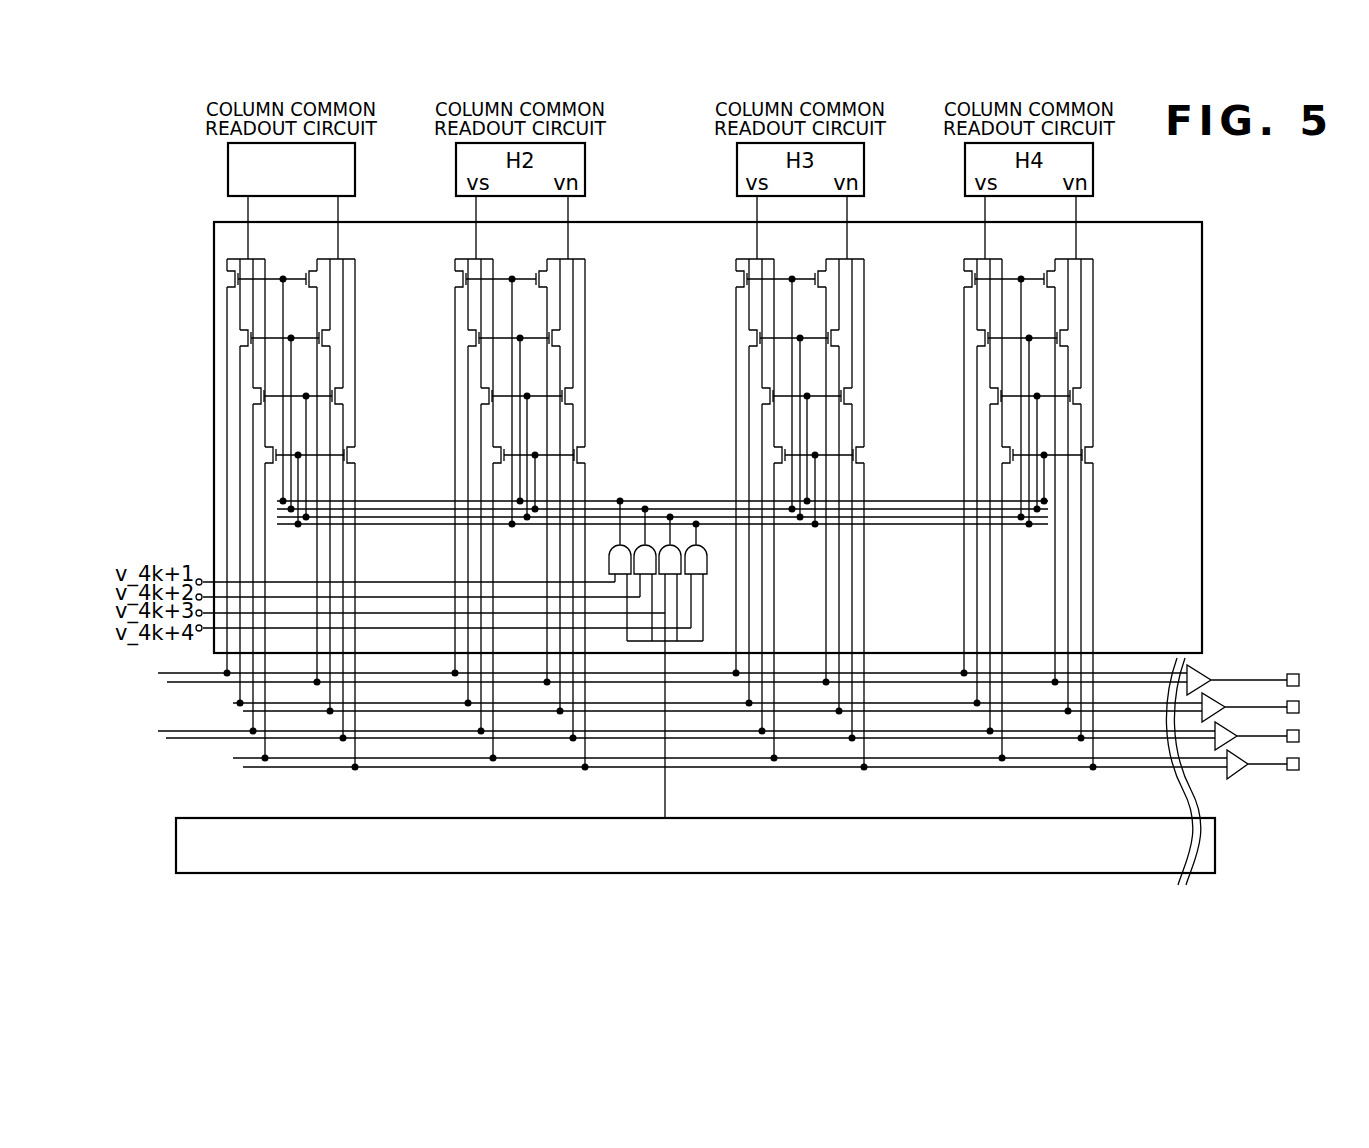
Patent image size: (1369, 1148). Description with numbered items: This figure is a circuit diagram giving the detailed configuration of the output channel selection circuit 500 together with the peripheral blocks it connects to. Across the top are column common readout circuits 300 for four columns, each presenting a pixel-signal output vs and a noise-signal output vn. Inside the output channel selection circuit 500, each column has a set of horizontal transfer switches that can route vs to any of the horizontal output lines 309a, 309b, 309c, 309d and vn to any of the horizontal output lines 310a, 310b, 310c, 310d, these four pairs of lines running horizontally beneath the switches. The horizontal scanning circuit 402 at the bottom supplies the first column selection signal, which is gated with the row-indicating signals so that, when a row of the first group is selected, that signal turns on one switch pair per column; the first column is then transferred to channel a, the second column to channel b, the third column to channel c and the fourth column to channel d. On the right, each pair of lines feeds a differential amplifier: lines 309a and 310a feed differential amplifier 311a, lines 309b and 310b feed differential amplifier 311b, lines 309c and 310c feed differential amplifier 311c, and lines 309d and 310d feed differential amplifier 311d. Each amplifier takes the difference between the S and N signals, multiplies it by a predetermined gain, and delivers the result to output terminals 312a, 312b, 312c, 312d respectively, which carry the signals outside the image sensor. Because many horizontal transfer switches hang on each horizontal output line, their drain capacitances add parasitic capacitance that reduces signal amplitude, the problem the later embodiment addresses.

The column common readout circuit 300 is at (228, 172).
The output channel selection circuit 500 is at (214, 228).
The horizontal output line 309a is at (169, 673).
The horizontal output line 309b is at (236, 703).
The horizontal output line 309c is at (164, 731).
The horizontal output line 309d is at (236, 759).
The horizontal output line 310a is at (168, 682).
The horizontal output line 310b is at (246, 711).
The horizontal output line 310c is at (166, 740).
The horizontal output line 310d is at (246, 767).
The differential amplifier 311a is at (1202, 662).
The differential amplifier 311b is at (1216, 689).
The differential amplifier 311c is at (1205, 750).
The differential amplifier 311d is at (1242, 778).
The output terminal 312a is at (1293, 673).
The output terminal 312b is at (1298, 702).
The output terminal 312c is at (1298, 742).
The output terminal 312d is at (1293, 770).
The horizontal scanning circuit 402 is at (176, 833).